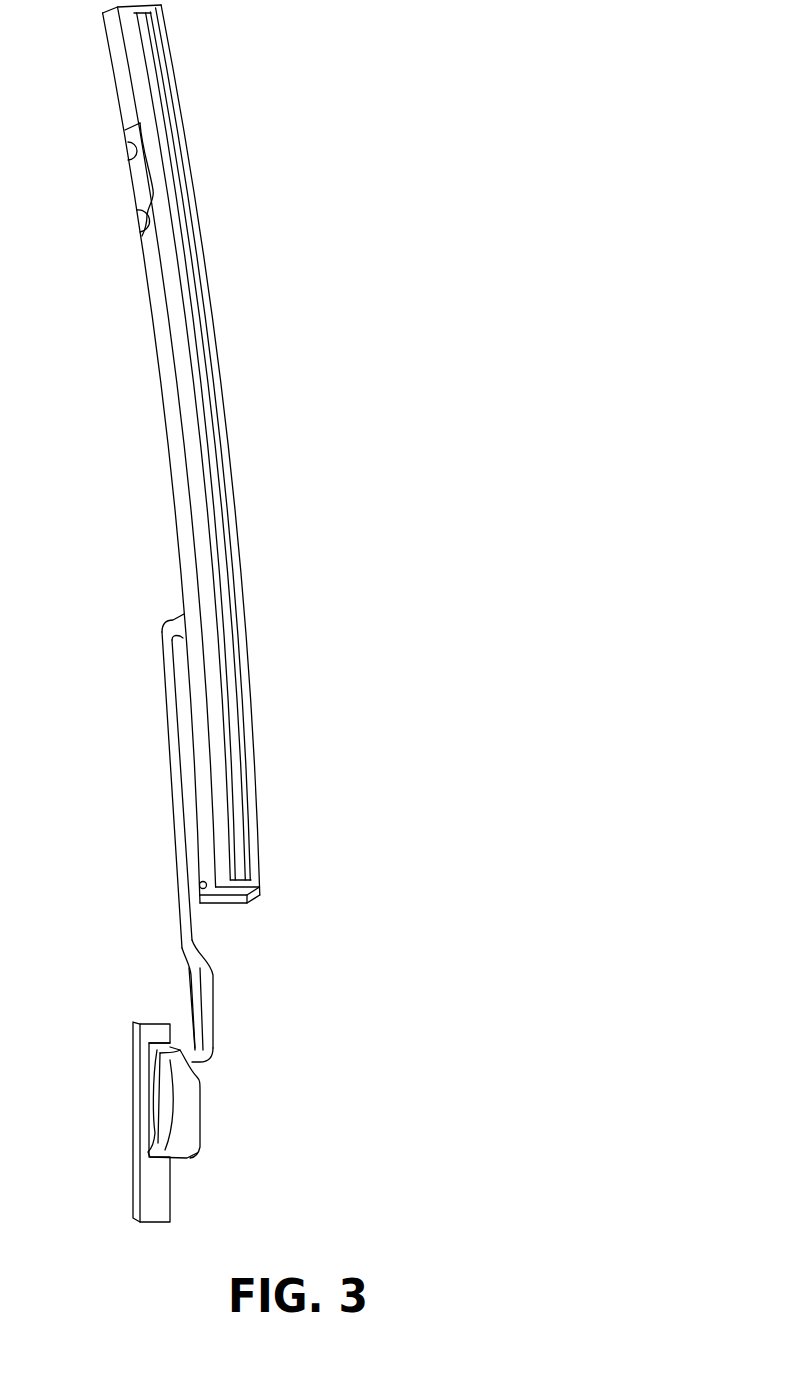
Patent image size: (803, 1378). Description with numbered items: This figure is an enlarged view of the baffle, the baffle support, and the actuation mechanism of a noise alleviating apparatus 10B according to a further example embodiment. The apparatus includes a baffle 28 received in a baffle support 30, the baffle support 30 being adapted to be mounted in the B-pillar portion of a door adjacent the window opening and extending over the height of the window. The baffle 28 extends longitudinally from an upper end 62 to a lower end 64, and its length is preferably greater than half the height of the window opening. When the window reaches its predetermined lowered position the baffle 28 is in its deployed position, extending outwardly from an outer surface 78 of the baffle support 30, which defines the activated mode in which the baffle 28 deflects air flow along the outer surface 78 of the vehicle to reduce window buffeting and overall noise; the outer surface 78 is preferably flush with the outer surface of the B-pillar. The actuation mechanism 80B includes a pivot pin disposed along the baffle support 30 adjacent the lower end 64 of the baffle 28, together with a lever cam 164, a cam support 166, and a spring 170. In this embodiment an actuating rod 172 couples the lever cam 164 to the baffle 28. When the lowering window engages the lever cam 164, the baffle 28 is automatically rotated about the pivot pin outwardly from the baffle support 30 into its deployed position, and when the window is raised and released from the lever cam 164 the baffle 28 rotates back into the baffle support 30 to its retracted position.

The noise alleviating apparatus 10B is at (466, 98).
The baffle 28 is at (154, 43).
The baffle support 30 is at (191, 142).
The outer surface 78 is at (188, 418).
The actuation mechanism 80B is at (402, 1113).
The upper end 62 is at (240, 877).
The lower end 64 is at (206, 884).
The actuating rod 172 is at (177, 711).
The spring 170 is at (191, 1000).
The lever cam 164 is at (184, 1108).
The cam support 166 is at (158, 1188).